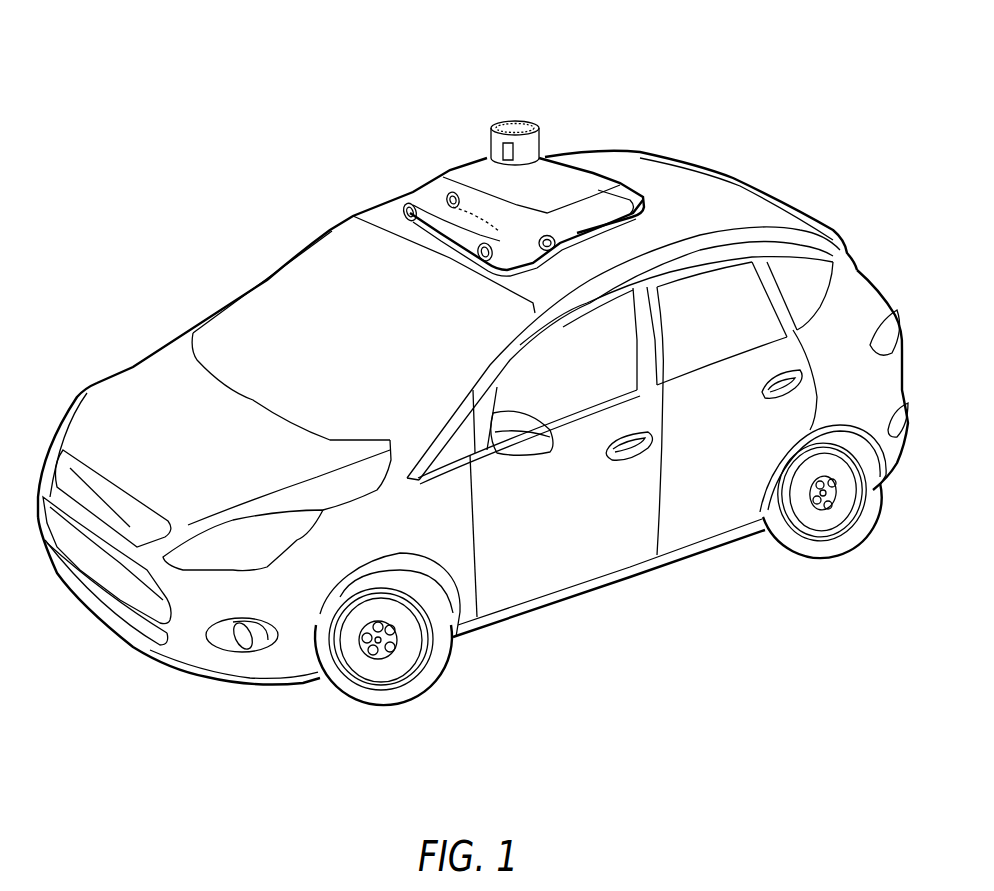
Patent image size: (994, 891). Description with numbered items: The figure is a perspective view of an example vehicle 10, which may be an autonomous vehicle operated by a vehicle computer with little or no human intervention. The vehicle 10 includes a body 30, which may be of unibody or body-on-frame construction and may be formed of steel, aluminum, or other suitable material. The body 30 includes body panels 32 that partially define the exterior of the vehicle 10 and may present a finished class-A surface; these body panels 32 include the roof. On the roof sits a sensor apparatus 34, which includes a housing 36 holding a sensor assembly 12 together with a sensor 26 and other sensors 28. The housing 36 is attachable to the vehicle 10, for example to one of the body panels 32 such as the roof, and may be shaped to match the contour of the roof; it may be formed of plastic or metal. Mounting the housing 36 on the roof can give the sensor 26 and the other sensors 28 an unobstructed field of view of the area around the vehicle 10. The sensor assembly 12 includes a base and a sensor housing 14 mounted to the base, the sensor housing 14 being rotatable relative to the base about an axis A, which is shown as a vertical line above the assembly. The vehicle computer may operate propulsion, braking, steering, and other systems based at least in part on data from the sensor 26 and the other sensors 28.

The vehicle 10 is at (242, 72).
The sensor assembly 12 is at (554, 122).
The sensor housing 14 is at (545, 146).
The sensor 26 is at (508, 163).
The other sensors 28 is at (450, 187).
The body 30 is at (617, 604).
The body panels 32 is at (724, 210).
The sensor apparatus 34 is at (441, 141).
The housing 36 is at (620, 183).